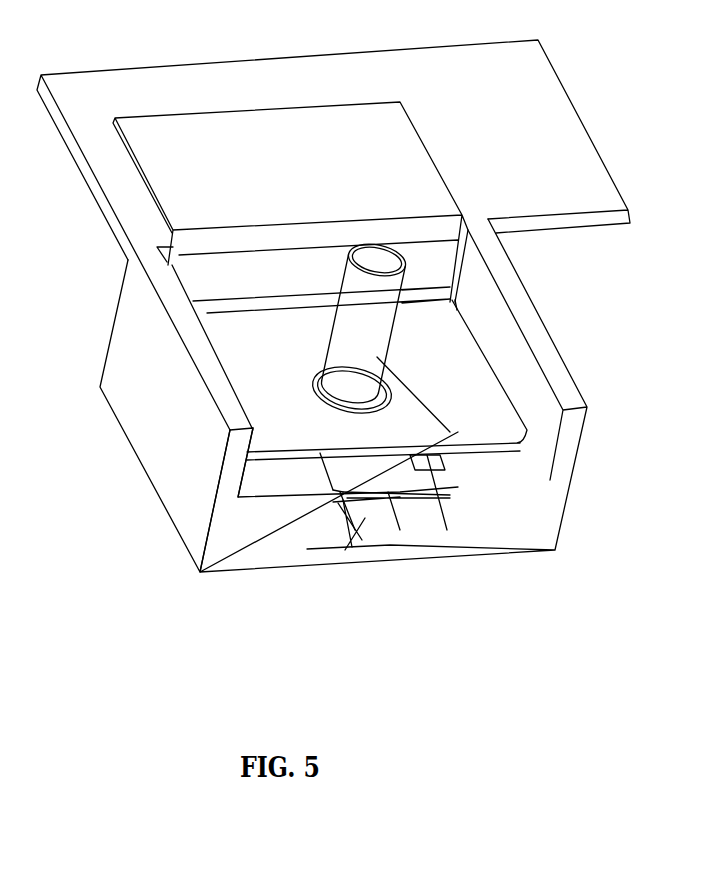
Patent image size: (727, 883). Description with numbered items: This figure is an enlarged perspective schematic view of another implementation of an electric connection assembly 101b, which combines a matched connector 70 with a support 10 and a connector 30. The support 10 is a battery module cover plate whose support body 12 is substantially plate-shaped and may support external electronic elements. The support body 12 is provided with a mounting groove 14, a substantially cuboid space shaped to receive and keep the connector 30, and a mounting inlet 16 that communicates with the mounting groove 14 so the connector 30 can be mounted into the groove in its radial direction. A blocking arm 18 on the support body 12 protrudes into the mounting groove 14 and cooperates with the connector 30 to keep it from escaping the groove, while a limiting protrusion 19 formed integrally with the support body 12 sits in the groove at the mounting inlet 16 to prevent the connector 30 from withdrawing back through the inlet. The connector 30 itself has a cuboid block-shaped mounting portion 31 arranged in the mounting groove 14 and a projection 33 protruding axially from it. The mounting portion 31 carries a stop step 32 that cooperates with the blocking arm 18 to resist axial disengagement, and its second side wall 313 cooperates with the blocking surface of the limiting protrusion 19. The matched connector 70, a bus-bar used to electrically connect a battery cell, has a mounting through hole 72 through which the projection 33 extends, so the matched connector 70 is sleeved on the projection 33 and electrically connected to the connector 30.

The electric connection assembly 101b is at (344, 31).
The support 10 is at (343, 449).
The support body 12 is at (203, 537).
The blocking arm 18 is at (360, 480).
The mounting inlet 16 is at (312, 530).
The mounting groove 14 is at (333, 512).
The limiting protrusion 19 is at (357, 503).
The connector 30 is at (349, 412).
The mounting portion 31 is at (392, 480).
The stop step 32 is at (447, 427).
The projection 33 is at (412, 434).
The matched connector 70 is at (313, 385).
The mounting through hole 72 is at (233, 320).
The second side wall 313 is at (375, 463).